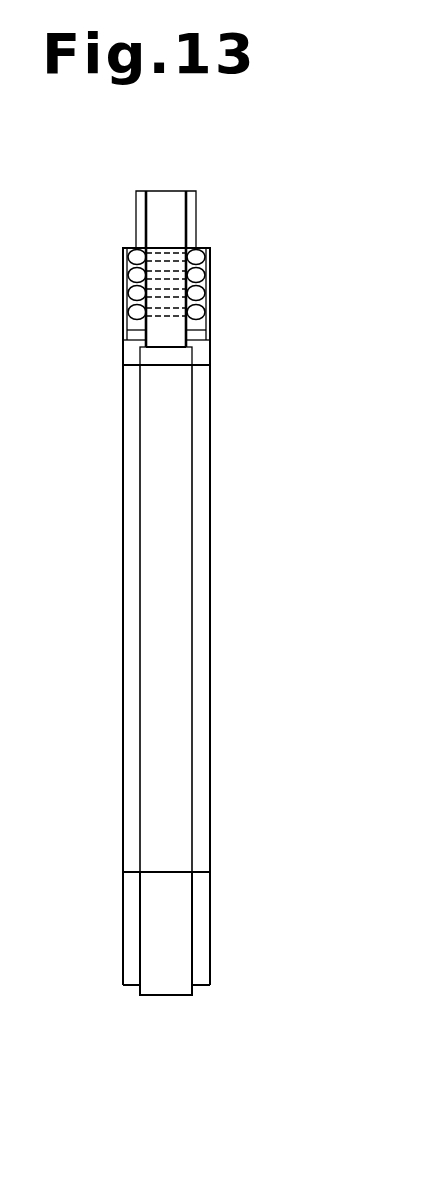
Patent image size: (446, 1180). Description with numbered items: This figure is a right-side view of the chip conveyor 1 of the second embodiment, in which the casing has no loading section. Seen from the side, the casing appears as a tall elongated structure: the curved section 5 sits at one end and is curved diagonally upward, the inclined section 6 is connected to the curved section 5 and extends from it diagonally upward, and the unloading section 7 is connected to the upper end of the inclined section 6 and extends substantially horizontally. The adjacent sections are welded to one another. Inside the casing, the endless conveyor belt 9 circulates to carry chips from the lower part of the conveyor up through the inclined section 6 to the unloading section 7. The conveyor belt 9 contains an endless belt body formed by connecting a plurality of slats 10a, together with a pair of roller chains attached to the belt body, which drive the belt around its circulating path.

The chip conveyor 1 is at (278, 332).
The curved section 5 is at (153, 940).
The inclined section 6 is at (155, 560).
The unloading section 7 is at (155, 243).
The conveyor belt 9 is at (206, 270).
The slats 10a is at (206, 295).